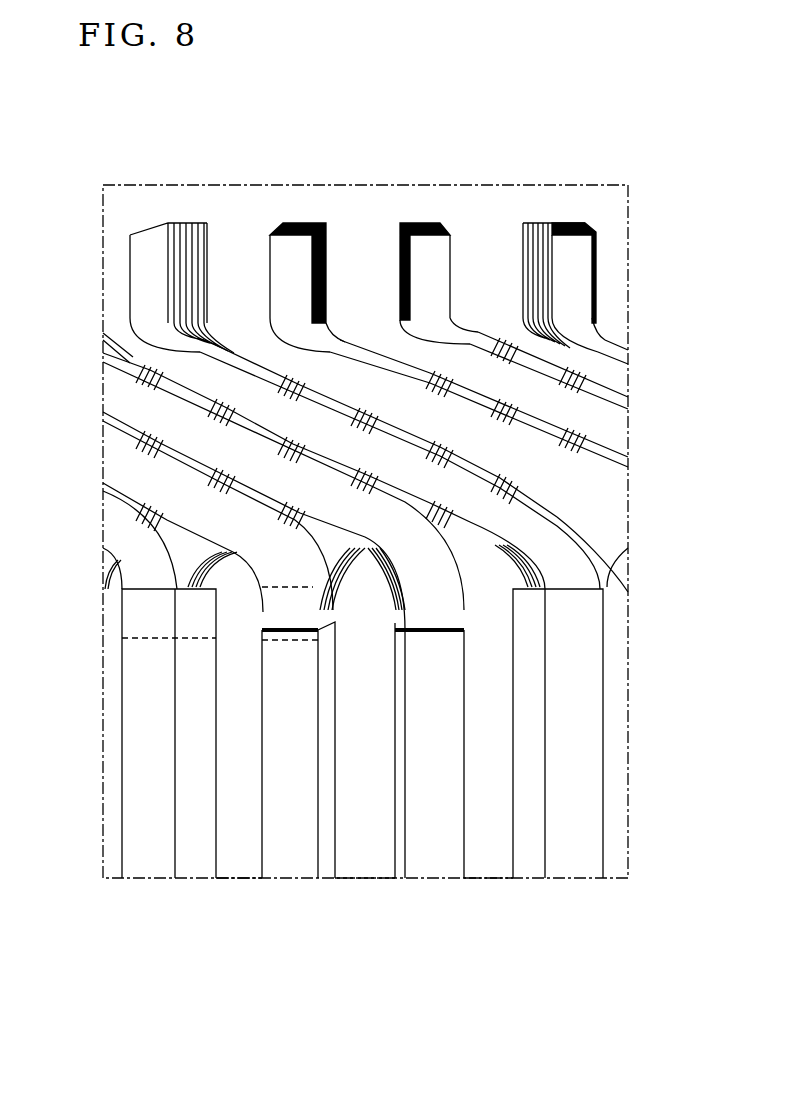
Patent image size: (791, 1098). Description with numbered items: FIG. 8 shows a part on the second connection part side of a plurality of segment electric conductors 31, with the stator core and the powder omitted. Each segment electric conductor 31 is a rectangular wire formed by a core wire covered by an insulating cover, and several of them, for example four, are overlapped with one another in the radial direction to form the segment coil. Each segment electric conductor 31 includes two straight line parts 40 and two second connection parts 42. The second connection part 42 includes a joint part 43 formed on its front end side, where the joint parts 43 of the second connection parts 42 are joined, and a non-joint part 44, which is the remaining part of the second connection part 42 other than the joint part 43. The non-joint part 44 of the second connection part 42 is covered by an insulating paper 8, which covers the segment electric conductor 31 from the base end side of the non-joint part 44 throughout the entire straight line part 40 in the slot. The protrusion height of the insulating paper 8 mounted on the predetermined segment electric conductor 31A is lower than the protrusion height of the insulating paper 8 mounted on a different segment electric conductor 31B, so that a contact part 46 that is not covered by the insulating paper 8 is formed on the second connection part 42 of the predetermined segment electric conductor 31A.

The second connection part 42 is at (395, 122).
The joint part 43 is at (293, 245).
The non-joint part 44 is at (343, 350).
The segment electric conductor 31 is at (733, 515).
The predetermined segment electric conductor 31A is at (325, 612).
The different segment electric conductor 31B is at (540, 537).
The straight line part 40 is at (580, 749).
The contact part 46 is at (282, 608).
The insulating paper 8 is at (569, 892).